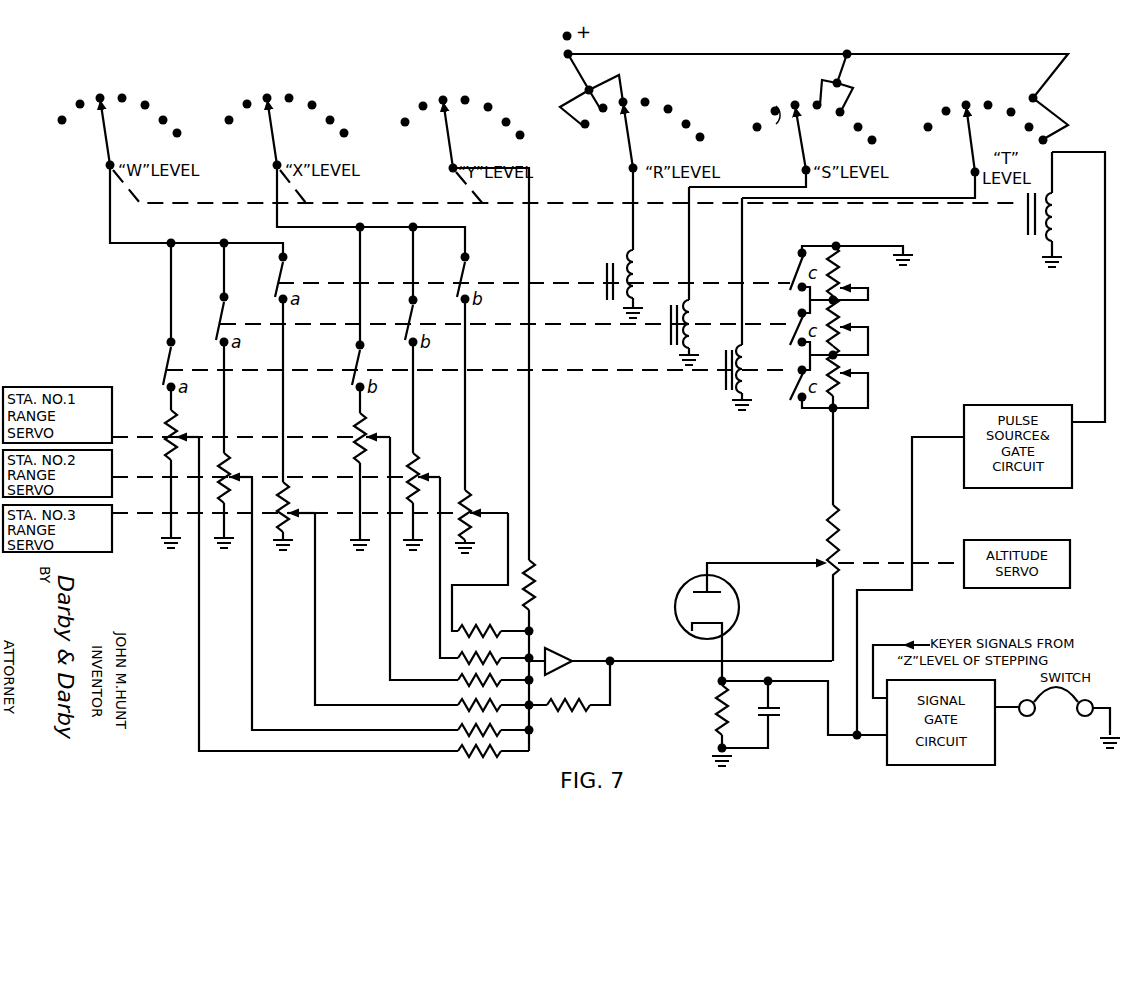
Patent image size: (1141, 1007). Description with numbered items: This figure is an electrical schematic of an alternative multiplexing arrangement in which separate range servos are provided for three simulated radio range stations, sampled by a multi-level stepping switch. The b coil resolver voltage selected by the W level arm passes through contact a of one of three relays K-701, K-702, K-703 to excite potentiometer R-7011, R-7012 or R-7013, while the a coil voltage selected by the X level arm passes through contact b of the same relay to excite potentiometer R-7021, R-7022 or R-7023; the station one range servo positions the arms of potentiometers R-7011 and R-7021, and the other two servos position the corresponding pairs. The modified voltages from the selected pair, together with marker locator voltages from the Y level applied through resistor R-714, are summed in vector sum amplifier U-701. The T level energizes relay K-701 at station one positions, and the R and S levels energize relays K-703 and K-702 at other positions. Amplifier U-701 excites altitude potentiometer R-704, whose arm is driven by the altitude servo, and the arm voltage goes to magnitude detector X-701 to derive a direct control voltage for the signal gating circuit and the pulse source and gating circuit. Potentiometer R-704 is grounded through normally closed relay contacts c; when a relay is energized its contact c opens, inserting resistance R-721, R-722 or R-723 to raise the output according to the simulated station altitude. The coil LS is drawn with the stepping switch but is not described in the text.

The potentiometer R-7011 is at (198, 417).
The potentiometer R-7012 is at (226, 453).
The potentiometer R-7013 is at (296, 493).
The potentiometer R-7021 is at (355, 432).
The potentiometer R-7022 is at (440, 462).
The potentiometer R-7023 is at (493, 497).
The resistor R-714 is at (533, 606).
The vector sum amplifier U-701 is at (578, 660).
The magnitude detector X-701 is at (682, 586).
The altitude potentiometer R-704 is at (826, 548).
The relay K-701 is at (742, 352).
The relay K-702 is at (690, 312).
The relay K-703 is at (633, 275).
The resistance R-721 is at (848, 374).
The adjustable resistor R-722 is at (848, 328).
The adjustable resistor R-723 is at (838, 265).
The loudspeaker transformer LS is at (1050, 215).